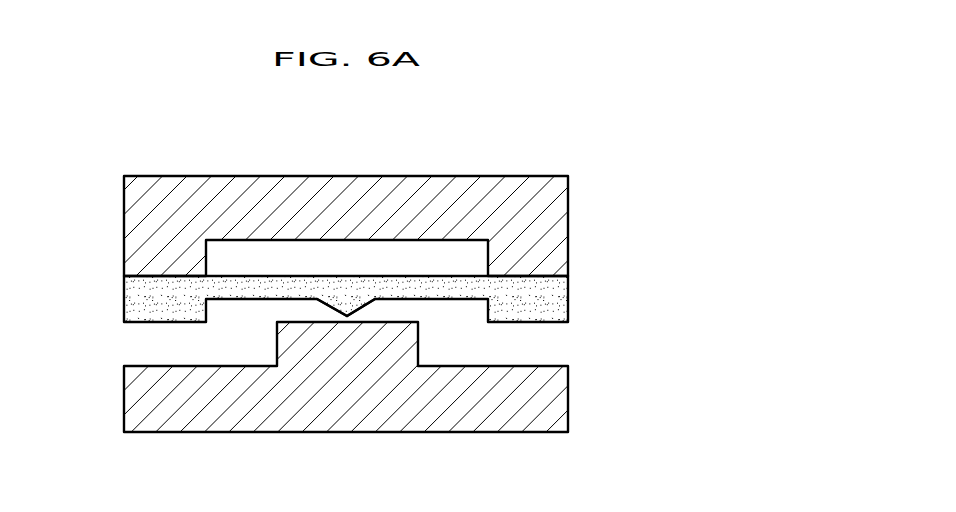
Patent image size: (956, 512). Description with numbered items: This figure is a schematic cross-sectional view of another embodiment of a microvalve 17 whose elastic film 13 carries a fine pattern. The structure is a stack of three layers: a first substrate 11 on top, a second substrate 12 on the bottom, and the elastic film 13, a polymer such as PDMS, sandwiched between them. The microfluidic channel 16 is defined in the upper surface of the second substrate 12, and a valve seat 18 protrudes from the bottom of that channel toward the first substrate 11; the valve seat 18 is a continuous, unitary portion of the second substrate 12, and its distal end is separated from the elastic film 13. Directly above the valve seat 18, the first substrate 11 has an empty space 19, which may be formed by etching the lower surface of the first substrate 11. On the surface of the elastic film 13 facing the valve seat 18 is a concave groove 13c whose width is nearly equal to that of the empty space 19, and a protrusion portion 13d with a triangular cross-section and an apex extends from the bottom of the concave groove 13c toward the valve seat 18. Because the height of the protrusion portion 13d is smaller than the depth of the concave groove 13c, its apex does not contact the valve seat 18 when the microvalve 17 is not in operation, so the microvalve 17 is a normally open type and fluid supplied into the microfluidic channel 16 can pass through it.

The microvalve 17 is at (588, 177).
The first substrate 11 is at (570, 227).
The empty space 19 is at (422, 260).
The elastic film 13 is at (570, 301).
The protrusion portion 13d is at (362, 308).
The concave groove 13c is at (445, 300).
The second substrate 12 is at (570, 400).
The valve seat 18 is at (277, 348).
The microfluidic channel 16 is at (162, 344).